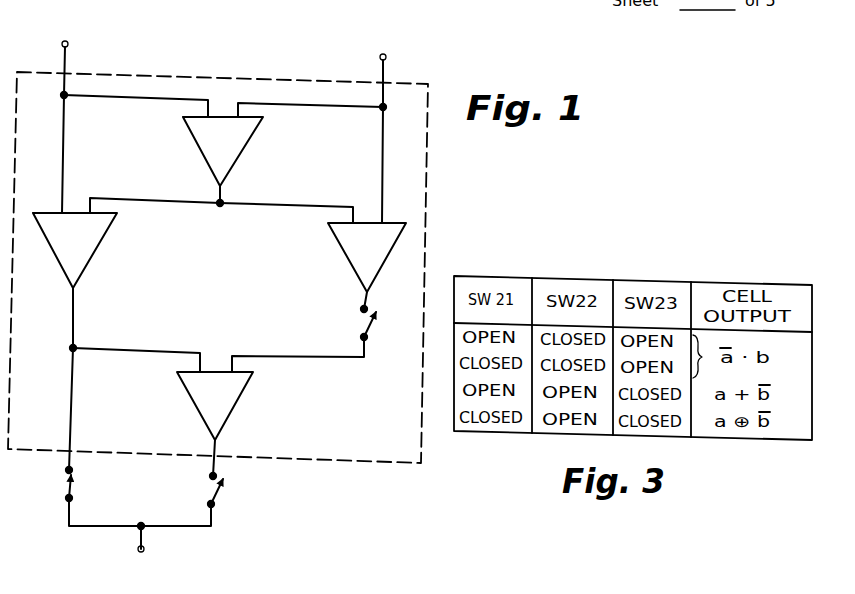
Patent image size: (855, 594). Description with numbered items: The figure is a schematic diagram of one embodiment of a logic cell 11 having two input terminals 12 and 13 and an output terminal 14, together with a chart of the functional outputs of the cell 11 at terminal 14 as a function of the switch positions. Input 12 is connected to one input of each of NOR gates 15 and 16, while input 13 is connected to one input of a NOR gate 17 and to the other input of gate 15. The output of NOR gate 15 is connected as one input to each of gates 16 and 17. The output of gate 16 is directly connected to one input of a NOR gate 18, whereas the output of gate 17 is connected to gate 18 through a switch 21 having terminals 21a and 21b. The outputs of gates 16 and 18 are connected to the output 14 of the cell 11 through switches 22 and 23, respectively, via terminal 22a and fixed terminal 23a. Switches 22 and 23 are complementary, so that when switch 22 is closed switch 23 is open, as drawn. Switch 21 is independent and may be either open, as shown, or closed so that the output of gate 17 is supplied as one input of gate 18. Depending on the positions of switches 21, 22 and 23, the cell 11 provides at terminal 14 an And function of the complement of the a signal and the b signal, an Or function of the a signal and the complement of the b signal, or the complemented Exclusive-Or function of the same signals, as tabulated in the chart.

The cell 11 is at (247, 62).
The input terminal 12 is at (68, 43).
The input terminal 13 is at (386, 55).
The output terminal 14 is at (144, 551).
The NOR gate 15 is at (244, 158).
The NOR gate 16 is at (96, 253).
The NOR gate 17 is at (343, 252).
The NOR gate 18 is at (236, 409).
The switch 21 is at (355, 327).
The terminal 21a is at (367, 303).
The terminal 21b is at (384, 346).
The switch 22 is at (66, 485).
The terminal 22a is at (73, 470).
The switch 23 is at (208, 491).
The fixed terminal 23a is at (217, 476).